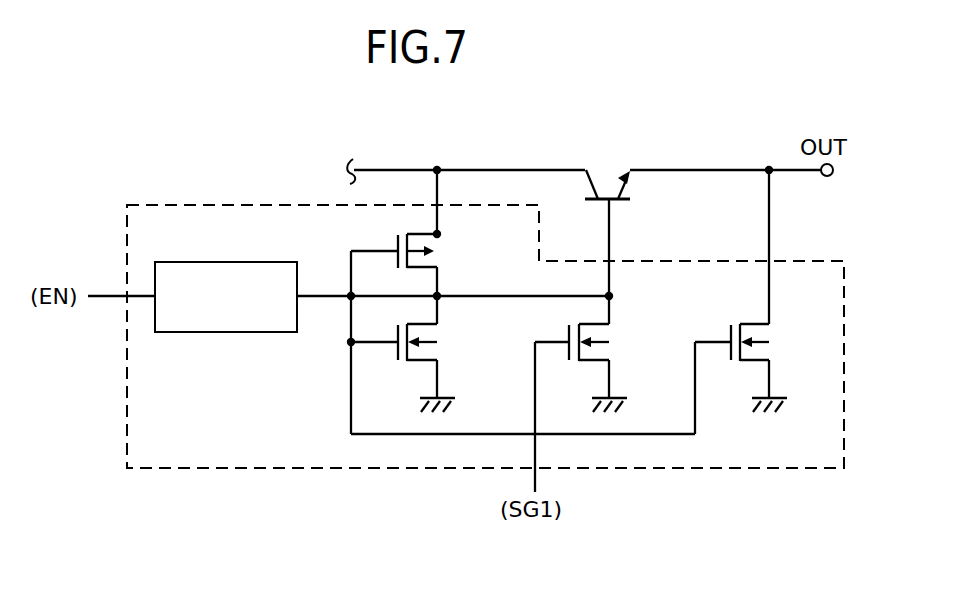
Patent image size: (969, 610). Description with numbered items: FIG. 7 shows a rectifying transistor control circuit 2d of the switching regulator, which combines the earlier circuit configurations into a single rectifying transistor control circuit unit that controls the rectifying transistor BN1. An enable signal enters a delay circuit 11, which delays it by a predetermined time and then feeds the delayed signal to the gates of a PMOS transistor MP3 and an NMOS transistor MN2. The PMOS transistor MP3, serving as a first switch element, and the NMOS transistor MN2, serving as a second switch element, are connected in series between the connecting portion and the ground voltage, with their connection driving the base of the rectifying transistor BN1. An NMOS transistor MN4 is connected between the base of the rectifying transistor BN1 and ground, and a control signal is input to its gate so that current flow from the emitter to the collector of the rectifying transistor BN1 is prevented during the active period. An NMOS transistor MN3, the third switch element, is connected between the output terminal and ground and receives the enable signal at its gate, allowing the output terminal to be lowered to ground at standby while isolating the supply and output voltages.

The delay circuit 11 is at (258, 333).
The rectifying transistor control circuit 2d is at (120, 421).
The PMOS transistor MP3 is at (444, 251).
The NMOS transistor MN2 is at (446, 342).
The NMOS transistor MN4 is at (616, 342).
The NMOS transistor MN3 is at (778, 342).
The rectifying transistor BN1 is at (609, 182).